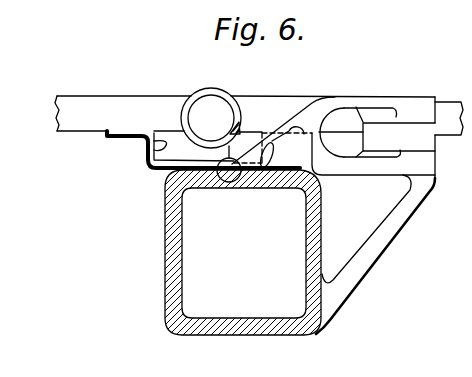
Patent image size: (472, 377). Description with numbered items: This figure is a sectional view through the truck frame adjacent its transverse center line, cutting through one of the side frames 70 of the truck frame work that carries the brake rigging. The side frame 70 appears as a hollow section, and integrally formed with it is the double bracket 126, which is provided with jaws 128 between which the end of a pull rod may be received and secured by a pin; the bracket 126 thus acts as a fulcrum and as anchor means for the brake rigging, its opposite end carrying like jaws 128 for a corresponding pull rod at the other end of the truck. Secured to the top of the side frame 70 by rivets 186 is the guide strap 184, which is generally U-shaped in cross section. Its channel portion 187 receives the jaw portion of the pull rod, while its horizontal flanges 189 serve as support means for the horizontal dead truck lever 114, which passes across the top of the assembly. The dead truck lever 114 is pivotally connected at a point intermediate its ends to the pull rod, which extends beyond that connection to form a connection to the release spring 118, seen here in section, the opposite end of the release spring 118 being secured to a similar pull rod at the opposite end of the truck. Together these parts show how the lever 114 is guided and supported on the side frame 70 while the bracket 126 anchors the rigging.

The side frame 70 is at (166, 249).
The horizontal dead truck lever 114 is at (61, 126).
The release spring 118 is at (212, 93).
The double bracket 126 is at (376, 255).
The jaws 128 is at (416, 123).
The guide strap 184 is at (150, 171).
The rivets 186 is at (229, 183).
The channel portion 187 is at (165, 147).
The horizontal flanges 189 is at (120, 136).